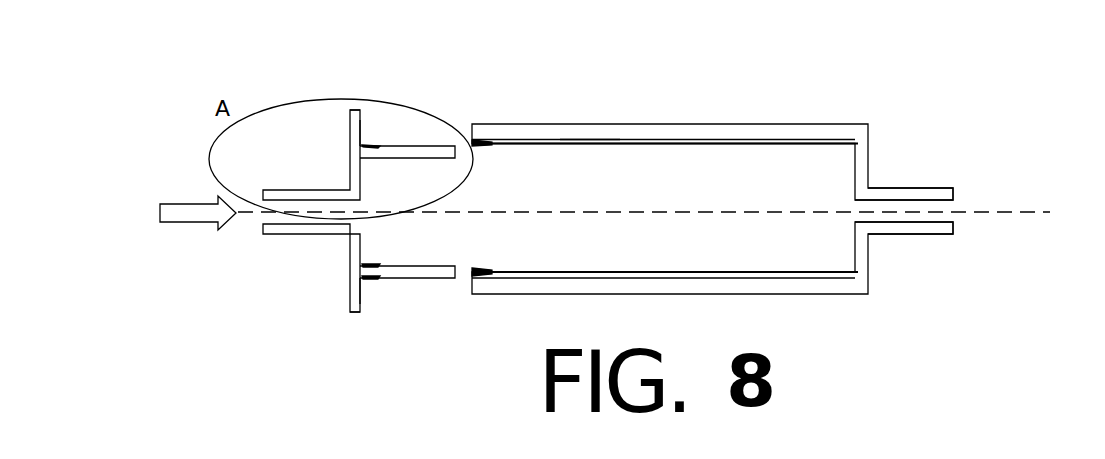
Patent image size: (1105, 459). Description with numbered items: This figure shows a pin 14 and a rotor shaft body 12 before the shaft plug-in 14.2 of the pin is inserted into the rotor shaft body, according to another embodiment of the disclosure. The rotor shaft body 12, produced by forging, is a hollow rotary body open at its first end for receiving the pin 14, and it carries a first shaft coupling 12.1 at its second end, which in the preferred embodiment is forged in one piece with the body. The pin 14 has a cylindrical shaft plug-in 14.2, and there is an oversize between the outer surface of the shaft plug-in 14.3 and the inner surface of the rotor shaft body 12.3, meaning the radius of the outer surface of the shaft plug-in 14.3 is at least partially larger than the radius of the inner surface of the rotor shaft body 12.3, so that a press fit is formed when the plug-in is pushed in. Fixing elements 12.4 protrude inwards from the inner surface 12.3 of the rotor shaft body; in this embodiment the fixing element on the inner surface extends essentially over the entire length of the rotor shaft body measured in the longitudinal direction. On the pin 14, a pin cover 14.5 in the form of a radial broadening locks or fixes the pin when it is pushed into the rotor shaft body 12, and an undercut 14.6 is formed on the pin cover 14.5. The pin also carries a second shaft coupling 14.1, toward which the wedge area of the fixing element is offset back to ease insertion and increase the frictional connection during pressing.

The rotor shaft body 12 is at (660, 118).
The first shaft coupling 12.1 is at (890, 195).
The inner surface of the rotor shaft body 12.3 is at (552, 277).
The fixing elements 12.4 is at (588, 142).
The pin 14 is at (433, 102).
The second shaft coupling 14.1 is at (287, 193).
The shaft plug-in 14.2 is at (437, 150).
The outer surface of the shaft plug-in 14.3 is at (393, 147).
The pin cover 14.5 is at (357, 123).
The undercut 14.6 is at (370, 127).